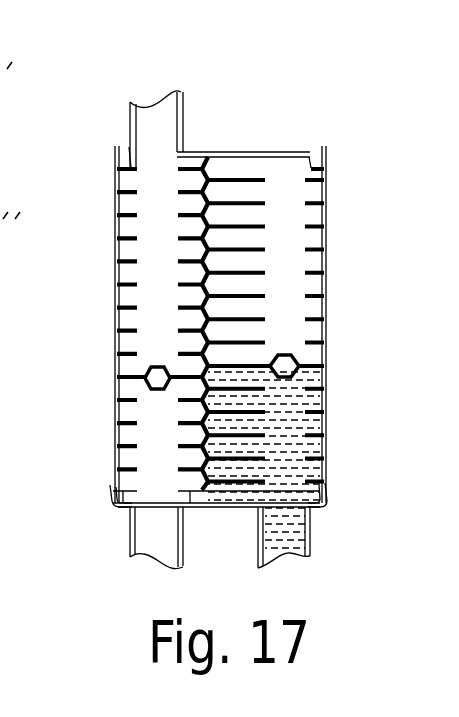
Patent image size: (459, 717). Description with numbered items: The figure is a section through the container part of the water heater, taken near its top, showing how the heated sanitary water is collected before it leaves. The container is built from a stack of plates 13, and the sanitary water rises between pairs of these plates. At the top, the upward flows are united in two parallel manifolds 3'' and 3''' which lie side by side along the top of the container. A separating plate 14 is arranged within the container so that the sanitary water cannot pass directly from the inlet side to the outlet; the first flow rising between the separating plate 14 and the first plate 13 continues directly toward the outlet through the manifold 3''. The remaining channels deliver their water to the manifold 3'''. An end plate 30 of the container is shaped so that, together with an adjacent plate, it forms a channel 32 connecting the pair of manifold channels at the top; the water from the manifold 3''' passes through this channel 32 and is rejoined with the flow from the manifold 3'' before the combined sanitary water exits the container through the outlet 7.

The outlet 7 is at (149, 127).
The end plate 30 is at (255, 152).
The channel 32 is at (203, 165).
The plate 13 is at (253, 179).
The manifold 3''' is at (361, 324).
The manifold 3'' is at (112, 324).
The separating plate 14 is at (125, 378).